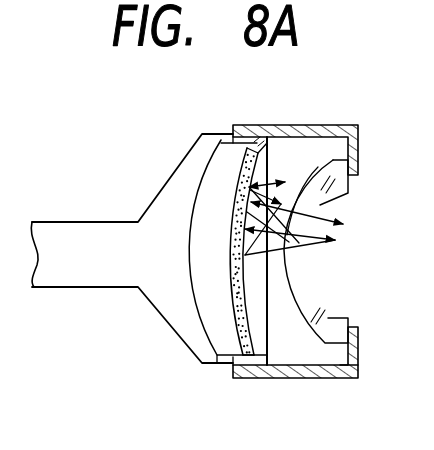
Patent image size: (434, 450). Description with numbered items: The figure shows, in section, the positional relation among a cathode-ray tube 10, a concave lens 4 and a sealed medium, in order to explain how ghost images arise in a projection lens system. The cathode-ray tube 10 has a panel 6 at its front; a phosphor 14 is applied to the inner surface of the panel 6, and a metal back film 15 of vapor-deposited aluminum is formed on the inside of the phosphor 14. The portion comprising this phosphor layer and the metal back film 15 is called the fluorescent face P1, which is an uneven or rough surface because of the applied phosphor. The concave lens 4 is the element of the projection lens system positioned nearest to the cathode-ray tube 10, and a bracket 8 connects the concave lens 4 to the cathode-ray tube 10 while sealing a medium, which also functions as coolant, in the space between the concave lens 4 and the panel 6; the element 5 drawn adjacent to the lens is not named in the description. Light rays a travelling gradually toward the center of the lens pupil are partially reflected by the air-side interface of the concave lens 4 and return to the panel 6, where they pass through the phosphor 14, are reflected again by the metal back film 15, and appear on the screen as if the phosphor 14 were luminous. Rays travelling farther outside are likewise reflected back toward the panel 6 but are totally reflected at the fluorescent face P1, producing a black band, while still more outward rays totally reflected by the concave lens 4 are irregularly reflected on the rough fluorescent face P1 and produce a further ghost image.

The concave lens 4 is at (338, 333).
The second lens 5 is at (300, 350).
The panel 6 is at (260, 318).
The bracket 8 is at (345, 372).
The cathode-ray tube 10 is at (153, 312).
The phosphor 14 is at (237, 313).
The metal back film 15 is at (233, 283).
The fluorescent face P1 is at (233, 317).
The light rays α a is at (270, 261).